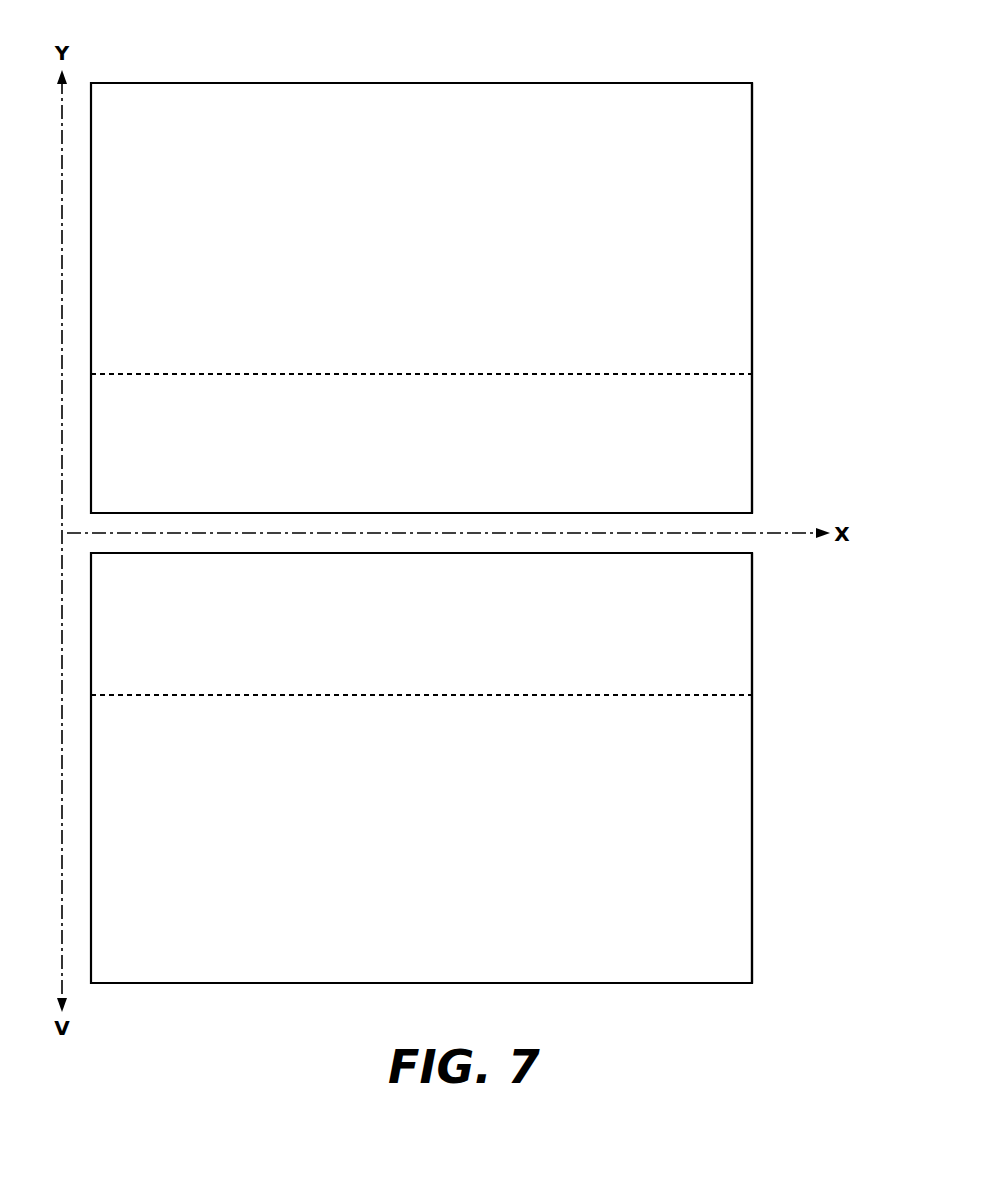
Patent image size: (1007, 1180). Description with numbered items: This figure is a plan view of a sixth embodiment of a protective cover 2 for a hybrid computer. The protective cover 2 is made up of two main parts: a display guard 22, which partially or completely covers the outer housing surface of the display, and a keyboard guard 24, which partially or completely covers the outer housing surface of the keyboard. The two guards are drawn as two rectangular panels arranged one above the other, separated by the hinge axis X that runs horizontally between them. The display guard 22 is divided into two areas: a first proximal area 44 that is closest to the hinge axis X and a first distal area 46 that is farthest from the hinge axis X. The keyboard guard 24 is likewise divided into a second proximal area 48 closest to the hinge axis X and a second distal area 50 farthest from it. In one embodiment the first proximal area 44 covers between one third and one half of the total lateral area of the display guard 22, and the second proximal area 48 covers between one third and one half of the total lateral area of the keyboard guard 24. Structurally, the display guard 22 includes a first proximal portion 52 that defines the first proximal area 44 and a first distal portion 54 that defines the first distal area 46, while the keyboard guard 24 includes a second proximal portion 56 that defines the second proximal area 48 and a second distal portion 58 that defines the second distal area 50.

The protective cover 2 is at (770, 45).
The display guard 22 is at (797, 85).
The keyboard guard 24 is at (797, 553).
The first proximal area 44 is at (276, 445).
The first distal area 46 is at (276, 262).
The second proximal area 48 is at (276, 645).
The second distal area 50 is at (276, 827).
The first proximal portion 52 is at (730, 453).
The first distal portion 54 is at (730, 176).
The second proximal portion 56 is at (730, 643).
The second distal portion 58 is at (730, 918).